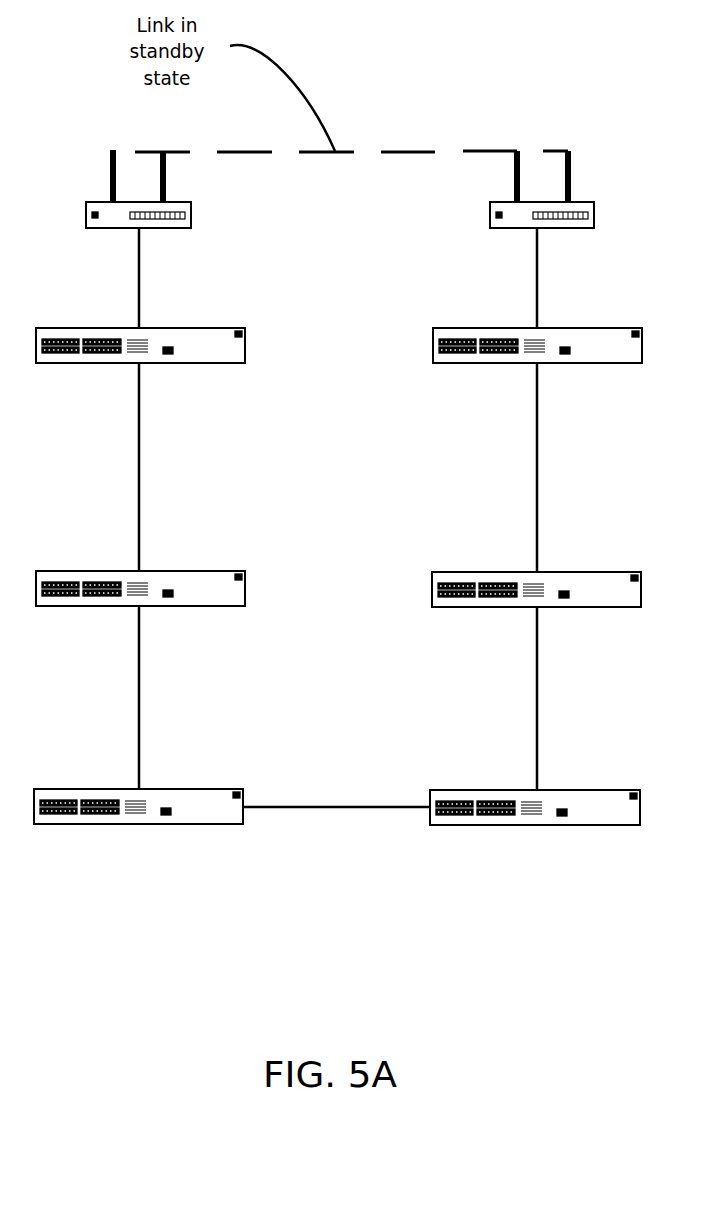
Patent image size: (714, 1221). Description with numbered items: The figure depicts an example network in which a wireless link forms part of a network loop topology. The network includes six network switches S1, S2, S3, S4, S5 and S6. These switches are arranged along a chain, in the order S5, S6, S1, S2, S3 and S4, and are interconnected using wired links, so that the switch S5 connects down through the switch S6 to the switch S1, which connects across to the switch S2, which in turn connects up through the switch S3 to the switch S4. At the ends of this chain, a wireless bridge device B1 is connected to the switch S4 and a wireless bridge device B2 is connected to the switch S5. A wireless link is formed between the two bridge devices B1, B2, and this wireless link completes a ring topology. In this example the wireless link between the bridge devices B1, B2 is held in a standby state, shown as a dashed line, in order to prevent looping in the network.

The wireless bridge device B1 is at (539, 207).
The wireless bridge device B2 is at (136, 207).
The network switch S1 is at (138, 830).
The network switch S2 is at (535, 830).
The network switch S3 is at (536, 612).
The network switch S4 is at (537, 368).
The network switch S5 is at (140, 368).
The network switch S6 is at (140, 612).